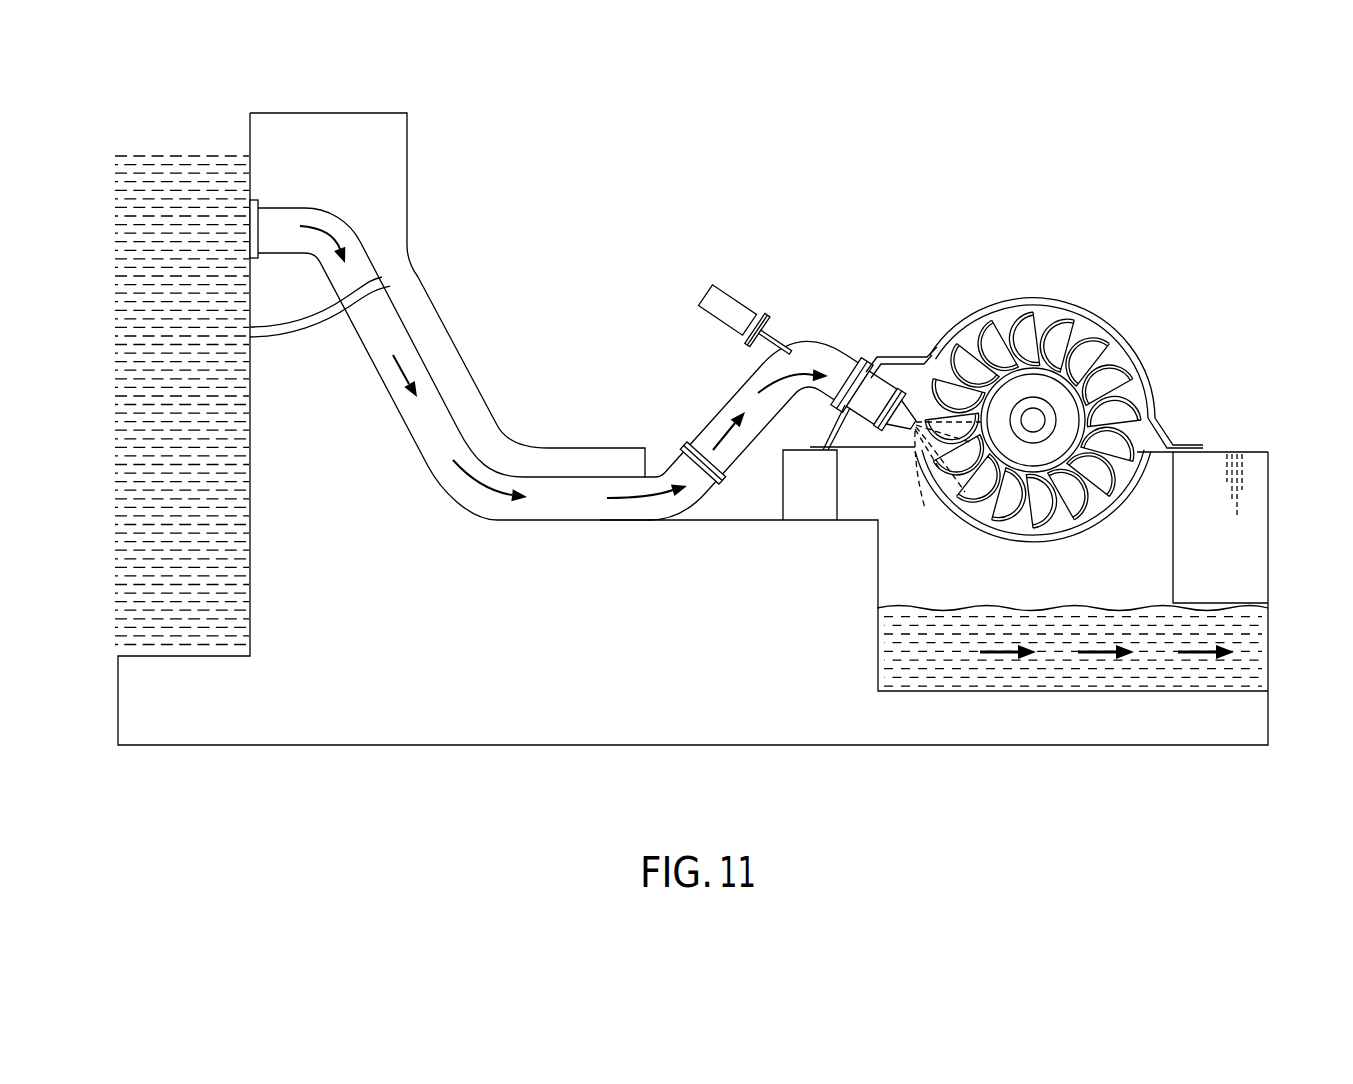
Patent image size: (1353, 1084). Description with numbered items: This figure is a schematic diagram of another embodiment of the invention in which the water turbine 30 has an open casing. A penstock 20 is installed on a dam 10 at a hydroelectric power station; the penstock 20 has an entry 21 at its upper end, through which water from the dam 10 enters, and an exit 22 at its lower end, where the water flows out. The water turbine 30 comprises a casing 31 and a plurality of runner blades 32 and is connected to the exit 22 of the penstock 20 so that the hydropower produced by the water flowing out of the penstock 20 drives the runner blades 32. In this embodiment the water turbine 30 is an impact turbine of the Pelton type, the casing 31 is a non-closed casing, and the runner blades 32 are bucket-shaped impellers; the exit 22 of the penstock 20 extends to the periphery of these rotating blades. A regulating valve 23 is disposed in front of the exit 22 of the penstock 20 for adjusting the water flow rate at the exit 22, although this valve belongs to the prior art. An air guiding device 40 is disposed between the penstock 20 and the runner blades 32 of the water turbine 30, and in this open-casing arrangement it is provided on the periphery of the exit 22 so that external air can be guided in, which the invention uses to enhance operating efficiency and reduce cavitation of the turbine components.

The dam 10 is at (250, 453).
The penstock 20 is at (392, 299).
The entry 21 is at (259, 224).
The exit 22 is at (912, 452).
The regulating valve 23 is at (727, 302).
The water turbine 30 is at (1132, 390).
The casing 31 is at (1085, 305).
The runner blades 32 is at (1112, 372).
The air guiding device 40 is at (923, 407).